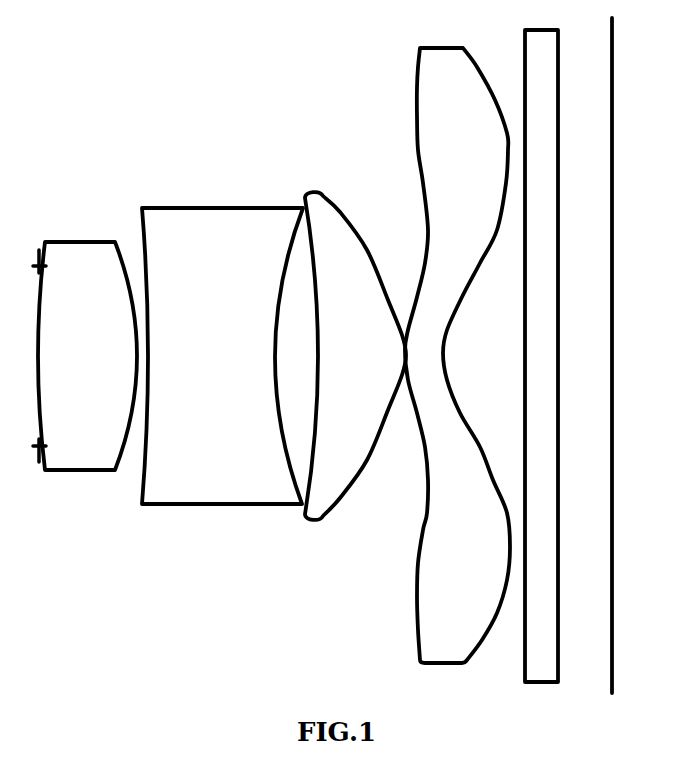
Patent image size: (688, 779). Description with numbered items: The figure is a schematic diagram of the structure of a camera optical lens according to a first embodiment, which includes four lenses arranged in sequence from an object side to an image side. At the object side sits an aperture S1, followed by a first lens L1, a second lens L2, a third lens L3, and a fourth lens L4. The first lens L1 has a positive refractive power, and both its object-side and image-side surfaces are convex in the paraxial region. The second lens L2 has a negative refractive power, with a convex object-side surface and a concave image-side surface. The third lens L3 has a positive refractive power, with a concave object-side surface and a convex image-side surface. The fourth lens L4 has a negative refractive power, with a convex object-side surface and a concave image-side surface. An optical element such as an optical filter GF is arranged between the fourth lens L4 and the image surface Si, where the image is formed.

The first lens L1 is at (87, 341).
The aperture S1 is at (30, 345).
The second lens L2 is at (222, 339).
The third lens L3 is at (349, 341).
The fourth lens L4 is at (457, 341).
The optical filter GF is at (540, 342).
The image surface Si is at (610, 346).